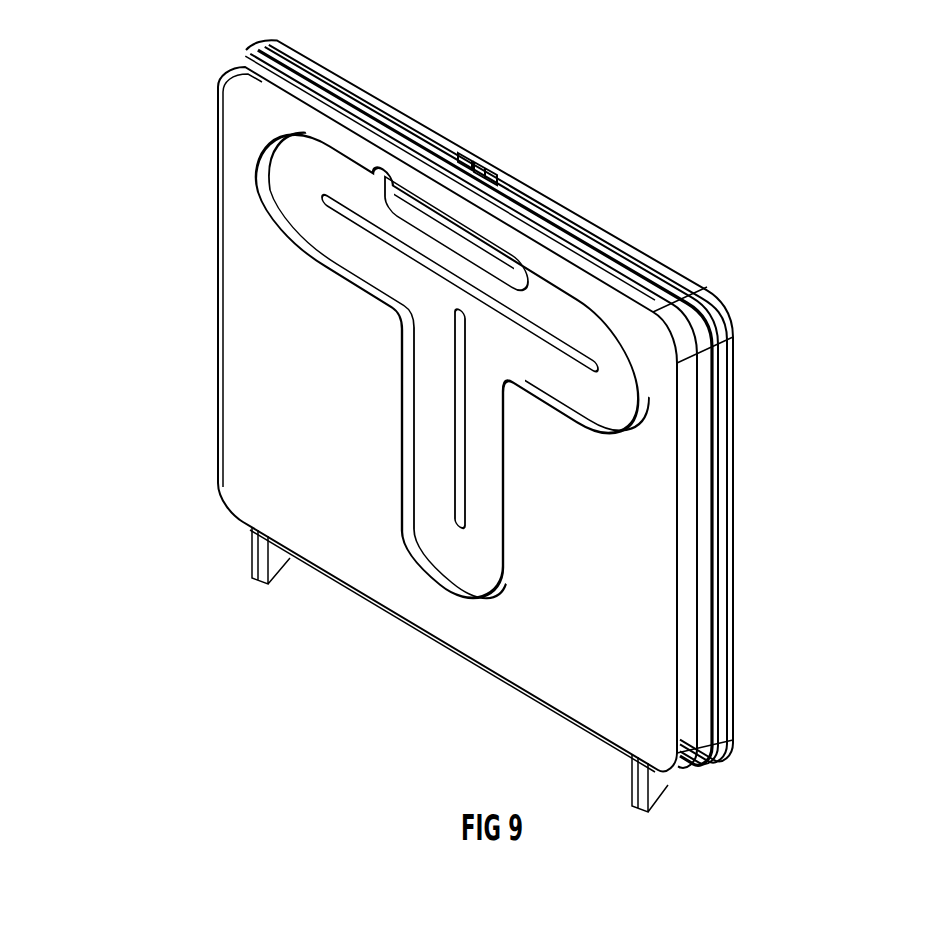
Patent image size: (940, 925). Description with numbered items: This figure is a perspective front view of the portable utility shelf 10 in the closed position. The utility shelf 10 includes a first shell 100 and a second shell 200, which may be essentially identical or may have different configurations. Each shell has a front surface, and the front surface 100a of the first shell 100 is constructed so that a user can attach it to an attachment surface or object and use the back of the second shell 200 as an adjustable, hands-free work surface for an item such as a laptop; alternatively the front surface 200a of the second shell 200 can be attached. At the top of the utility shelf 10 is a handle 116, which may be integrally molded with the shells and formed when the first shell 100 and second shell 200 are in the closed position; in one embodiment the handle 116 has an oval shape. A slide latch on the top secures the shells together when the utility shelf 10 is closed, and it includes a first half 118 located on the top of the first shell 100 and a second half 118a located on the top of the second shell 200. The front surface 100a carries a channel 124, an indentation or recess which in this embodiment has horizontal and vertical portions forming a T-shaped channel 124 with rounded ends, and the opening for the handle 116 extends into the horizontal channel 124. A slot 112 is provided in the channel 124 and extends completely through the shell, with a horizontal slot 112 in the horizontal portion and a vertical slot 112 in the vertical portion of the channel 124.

The portable utility shelf 10 is at (467, 445).
The first shell 100 is at (346, 445).
The front surface of the first shell 100a is at (346, 445).
The slot 112 is at (330, 200).
The handle 116 is at (447, 217).
The first half of the slide latch 118 is at (506, 170).
The second half of the slide latch 118a is at (470, 152).
The channel 124 is at (332, 445).
The second shell 200 is at (740, 387).
The front surface of the second shell 200a is at (582, 404).